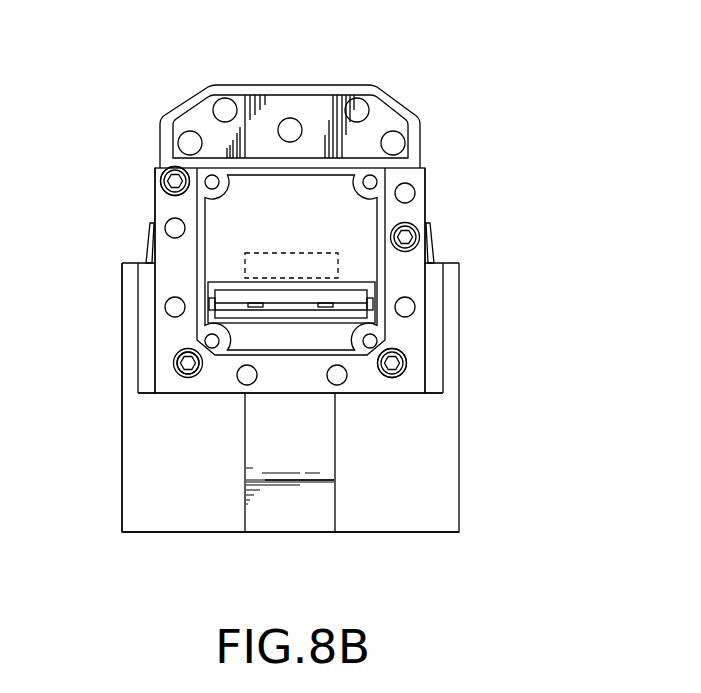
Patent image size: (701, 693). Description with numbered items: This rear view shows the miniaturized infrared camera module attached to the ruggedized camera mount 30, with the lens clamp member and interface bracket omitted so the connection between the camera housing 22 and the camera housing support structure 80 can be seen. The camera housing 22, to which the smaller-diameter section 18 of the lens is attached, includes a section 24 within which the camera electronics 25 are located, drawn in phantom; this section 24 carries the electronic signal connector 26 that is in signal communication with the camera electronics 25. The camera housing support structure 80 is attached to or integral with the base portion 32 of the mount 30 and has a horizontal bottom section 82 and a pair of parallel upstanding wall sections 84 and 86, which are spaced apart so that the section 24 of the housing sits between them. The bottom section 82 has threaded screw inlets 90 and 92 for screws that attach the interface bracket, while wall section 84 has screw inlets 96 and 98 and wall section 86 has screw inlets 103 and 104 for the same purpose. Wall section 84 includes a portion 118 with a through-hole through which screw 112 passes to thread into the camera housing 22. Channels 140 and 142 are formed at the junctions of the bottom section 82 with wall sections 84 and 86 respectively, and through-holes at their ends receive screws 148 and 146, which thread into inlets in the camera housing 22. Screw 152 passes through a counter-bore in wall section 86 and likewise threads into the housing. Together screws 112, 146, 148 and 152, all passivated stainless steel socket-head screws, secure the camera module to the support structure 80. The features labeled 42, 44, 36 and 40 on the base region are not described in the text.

The camera housing 22 is at (302, 85).
The screw 112 is at (175, 181).
The portion 118 is at (153, 185).
The upstanding wall section 84 is at (155, 205).
The screw inlet 96 is at (175, 228).
The section 24 is at (230, 245).
The screw inlet 98 is at (175, 307).
The left side wall 42 is at (120, 342).
The channel 140 is at (177, 348).
The camera housing support structure 80 is at (167, 383).
The screw 148 is at (188, 368).
The threaded screw inlet 90 is at (245, 383).
The horizontal bottom section 82 is at (290, 385).
The threaded screw inlet 92 is at (338, 382).
The base portion 32 is at (120, 468).
The bottom surface 40 is at (183, 532).
The central slot 36 is at (283, 517).
The ruggedized camera mount 30 is at (460, 485).
The screw inlet 103 is at (410, 192).
The upstanding wall section 86 is at (427, 205).
The screw 152 is at (410, 237).
The section 18 is at (430, 248).
The screw inlet 104 is at (407, 307).
The right side wall 44 is at (460, 342).
The channel 142 is at (405, 342).
The screw 146 is at (407, 367).
The camera electronics 25 is at (313, 252).
The electronic signal connector 26 is at (285, 288).